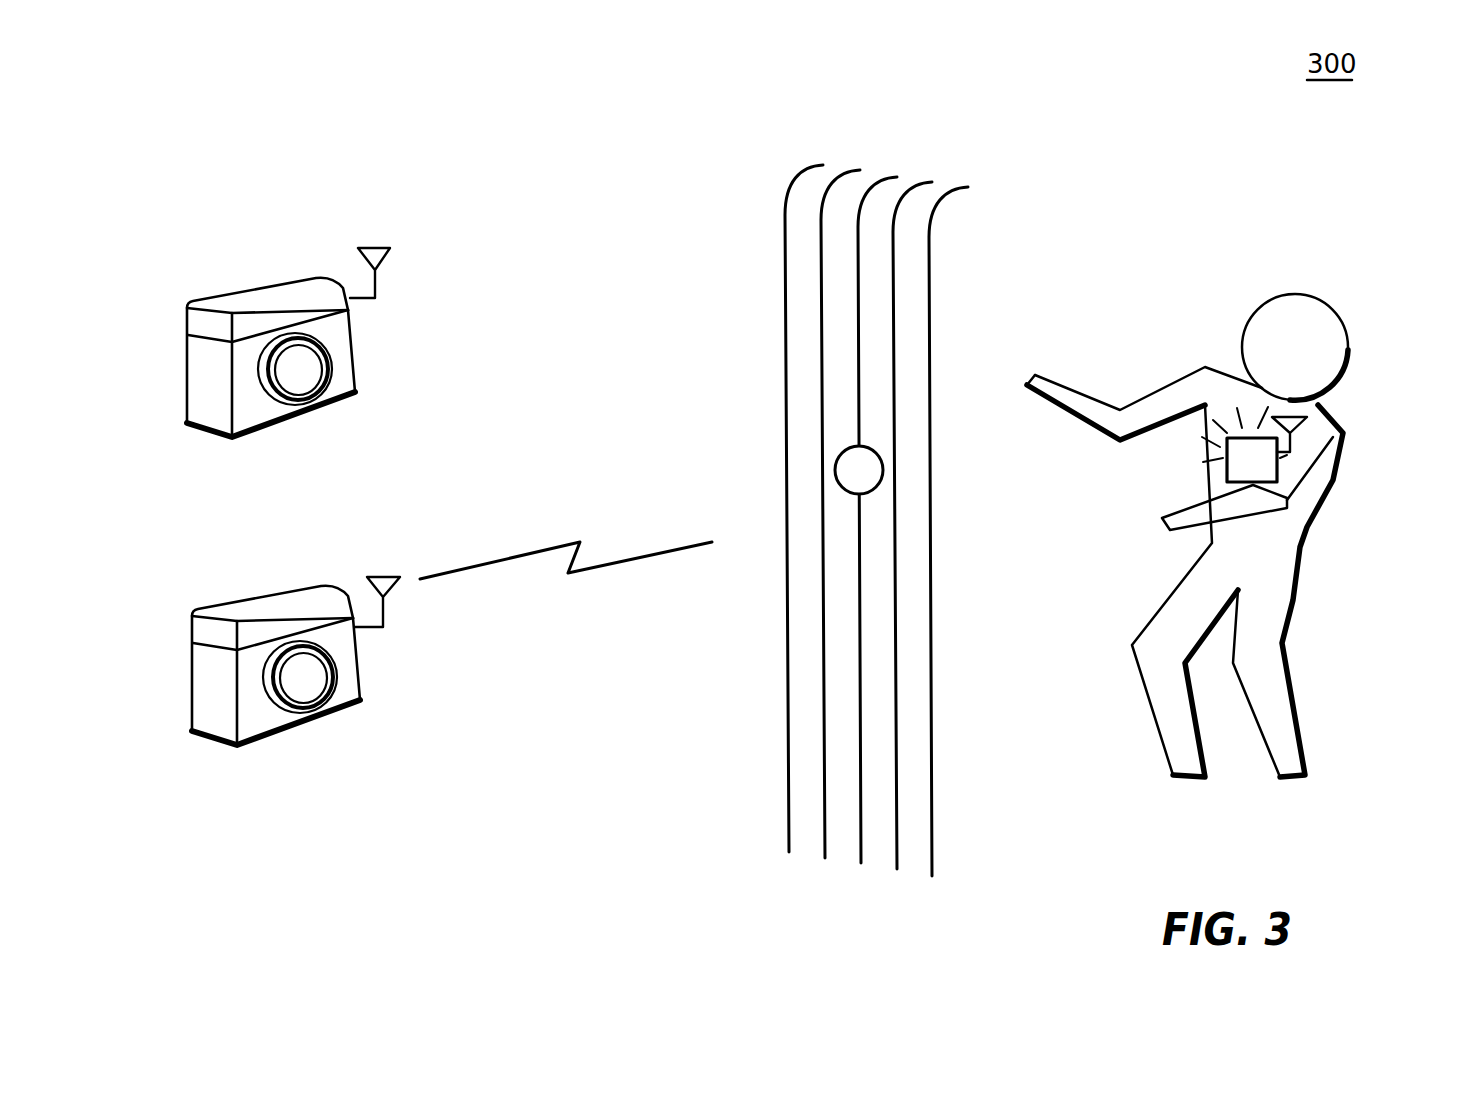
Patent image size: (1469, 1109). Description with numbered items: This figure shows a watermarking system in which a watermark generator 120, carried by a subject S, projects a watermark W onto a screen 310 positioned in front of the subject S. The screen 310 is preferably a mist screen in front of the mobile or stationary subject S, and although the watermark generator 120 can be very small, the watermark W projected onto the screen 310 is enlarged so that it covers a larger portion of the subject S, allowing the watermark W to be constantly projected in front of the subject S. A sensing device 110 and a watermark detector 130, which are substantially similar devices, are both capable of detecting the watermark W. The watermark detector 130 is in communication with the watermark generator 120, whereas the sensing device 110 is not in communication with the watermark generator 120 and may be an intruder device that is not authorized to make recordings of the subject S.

The sensing device 110 is at (262, 292).
The watermark detector 130 is at (190, 658).
The screen 310 is at (995, 148).
The watermark W is at (835, 465).
The subject S is at (1348, 363).
The watermark generator 120 is at (1267, 470).